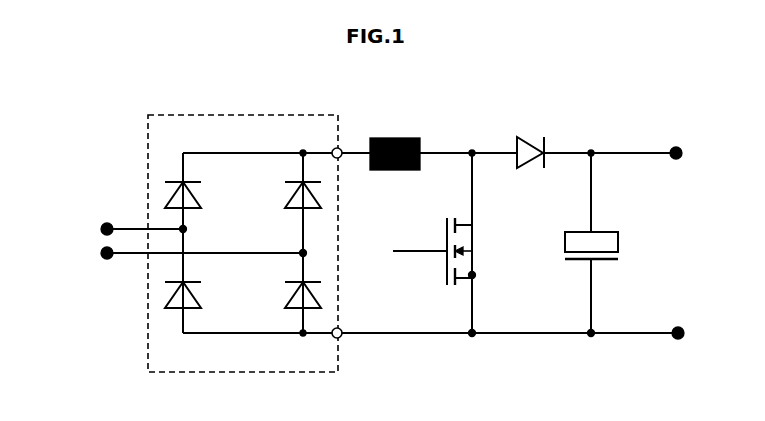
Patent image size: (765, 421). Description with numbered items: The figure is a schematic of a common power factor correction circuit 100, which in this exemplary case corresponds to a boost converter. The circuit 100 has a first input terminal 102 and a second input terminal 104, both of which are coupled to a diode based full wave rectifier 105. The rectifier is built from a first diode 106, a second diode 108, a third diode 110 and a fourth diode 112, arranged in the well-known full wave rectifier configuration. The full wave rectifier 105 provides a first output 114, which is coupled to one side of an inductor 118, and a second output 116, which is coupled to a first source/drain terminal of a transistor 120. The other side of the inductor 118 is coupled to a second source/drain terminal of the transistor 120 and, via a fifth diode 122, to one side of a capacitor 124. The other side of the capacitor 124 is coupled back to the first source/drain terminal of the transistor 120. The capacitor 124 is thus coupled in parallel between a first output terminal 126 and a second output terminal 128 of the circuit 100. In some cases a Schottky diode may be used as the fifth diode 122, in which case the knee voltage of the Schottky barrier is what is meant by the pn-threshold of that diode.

The PFC circuit 100 is at (95, 138).
The first input terminal 102 is at (108, 222).
The second input terminal 104 is at (107, 267).
The full wave rectifier 105 is at (287, 113).
The first diode 106 is at (192, 213).
The second diode 108 is at (294, 172).
The third diode 110 is at (193, 313).
The fourth diode 112 is at (288, 290).
The first output 114 is at (343, 148).
The second output 116 is at (344, 327).
The inductor 118 is at (408, 135).
The transistor 120 is at (437, 268).
The fifth diode 122 is at (533, 143).
The capacitor 124 is at (612, 230).
The first output terminal 126 is at (678, 146).
The second output terminal 128 is at (678, 327).